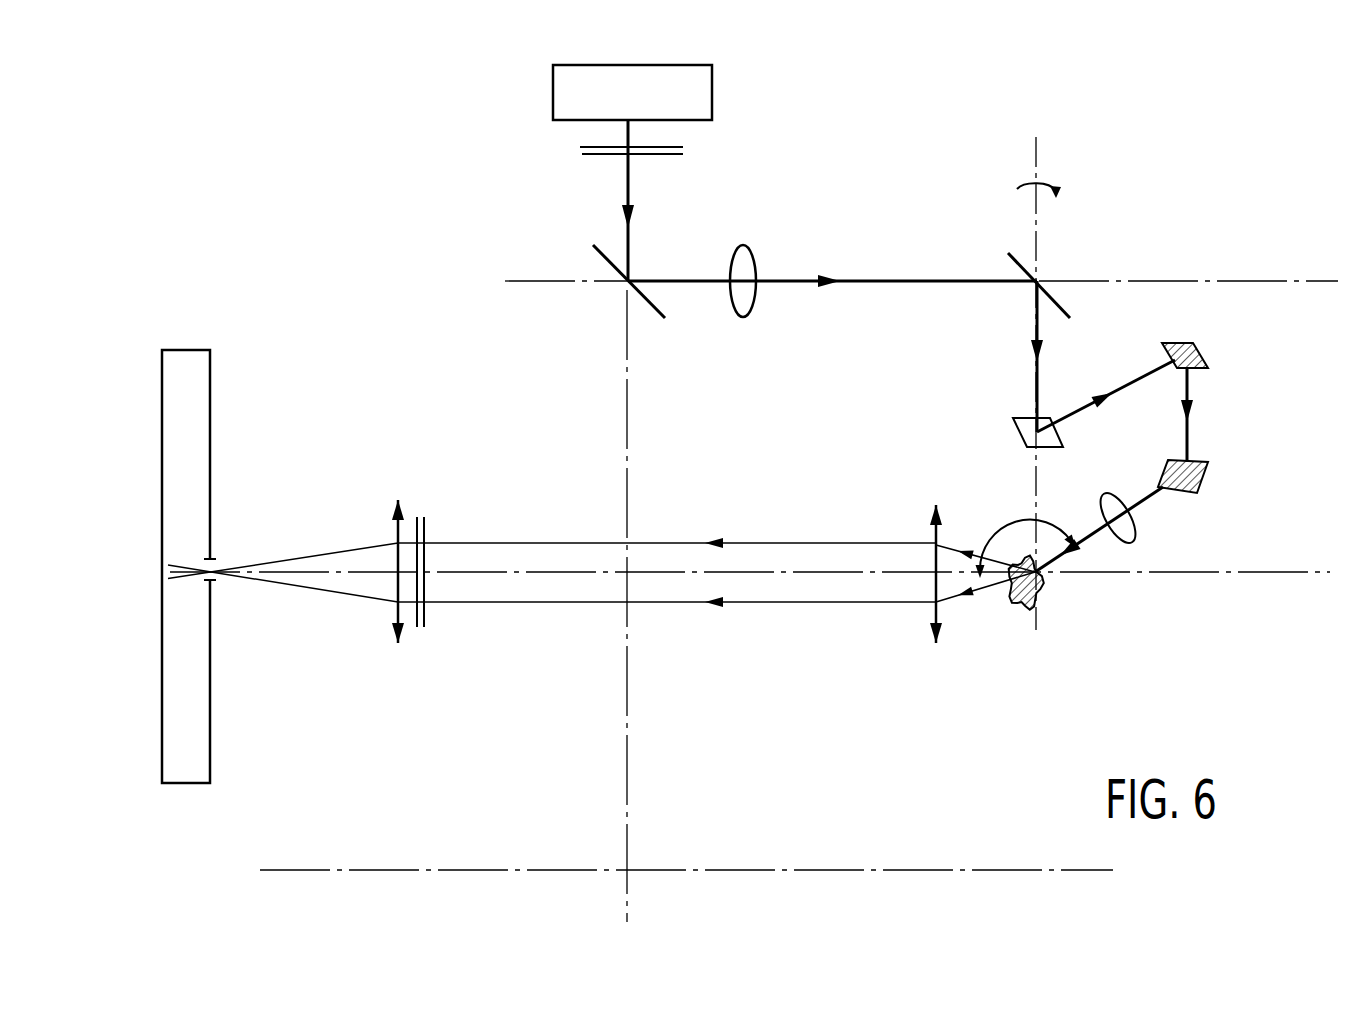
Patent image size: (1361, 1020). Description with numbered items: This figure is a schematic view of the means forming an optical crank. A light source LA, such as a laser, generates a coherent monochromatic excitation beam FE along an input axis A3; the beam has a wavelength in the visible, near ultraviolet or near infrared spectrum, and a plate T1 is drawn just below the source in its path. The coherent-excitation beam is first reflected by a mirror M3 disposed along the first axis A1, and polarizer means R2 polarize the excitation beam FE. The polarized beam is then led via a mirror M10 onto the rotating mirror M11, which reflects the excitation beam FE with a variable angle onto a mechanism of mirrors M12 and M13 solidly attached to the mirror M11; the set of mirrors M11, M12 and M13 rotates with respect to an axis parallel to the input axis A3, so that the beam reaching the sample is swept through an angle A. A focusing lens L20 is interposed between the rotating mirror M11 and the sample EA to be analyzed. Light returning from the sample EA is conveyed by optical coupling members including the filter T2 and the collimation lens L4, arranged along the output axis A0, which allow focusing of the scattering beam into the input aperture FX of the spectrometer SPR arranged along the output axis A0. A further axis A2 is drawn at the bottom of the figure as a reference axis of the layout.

The light source LA is at (712, 88).
The first telescope / beam expander plate T1 is at (585, 156).
The excitation beam FE is at (875, 283).
The mirror M3 is at (660, 312).
The polarizer means R2 is at (764, 252).
The mirror M10 is at (1072, 305).
The first axis A1 is at (1293, 283).
The rotating mirror M11 is at (1013, 426).
The mirror M12 is at (1208, 352).
The mirror M13 is at (1198, 462).
The focusing lens L20 is at (1135, 525).
The output axis A0 is at (1290, 573).
The scanning angle A is at (1026, 536).
The sample EA is at (1043, 598).
The collimation lens L4 is at (395, 633).
The filter T2 is at (427, 617).
The spectrometer SPR is at (190, 784).
The input aperture FX is at (215, 580).
The input axis A3 is at (627, 895).
The second axis A2 is at (1085, 873).